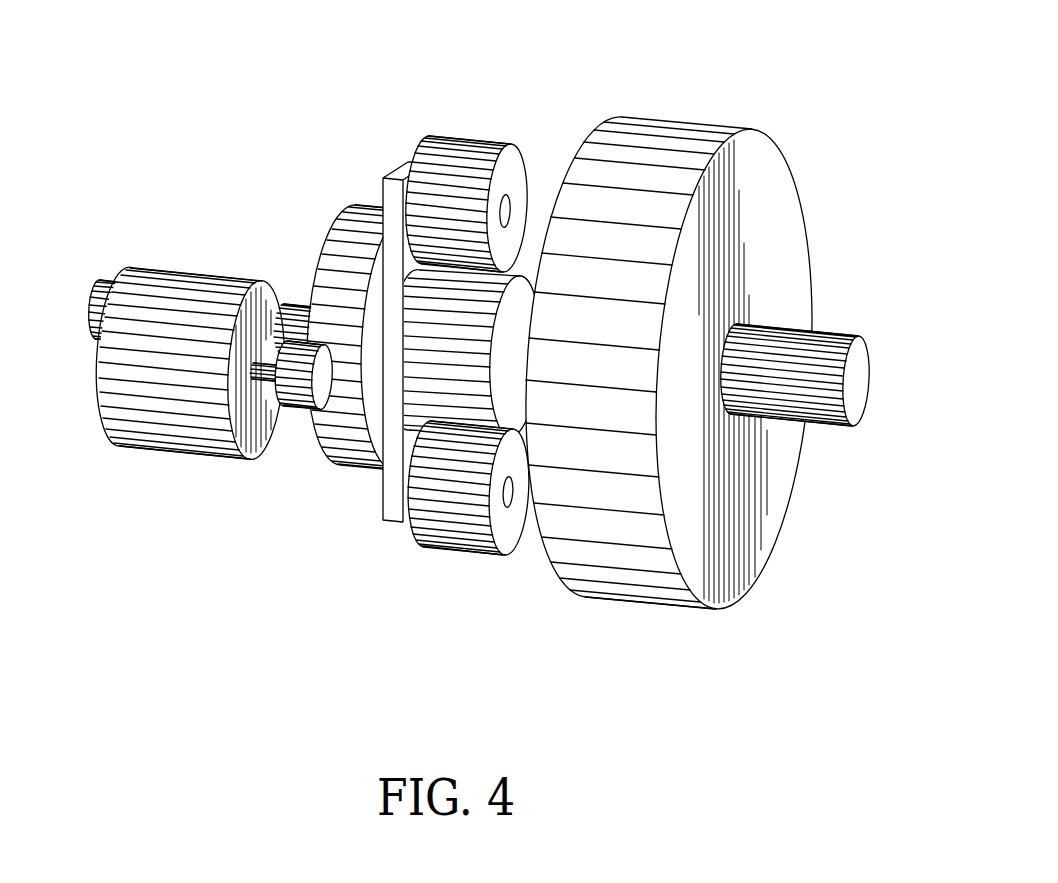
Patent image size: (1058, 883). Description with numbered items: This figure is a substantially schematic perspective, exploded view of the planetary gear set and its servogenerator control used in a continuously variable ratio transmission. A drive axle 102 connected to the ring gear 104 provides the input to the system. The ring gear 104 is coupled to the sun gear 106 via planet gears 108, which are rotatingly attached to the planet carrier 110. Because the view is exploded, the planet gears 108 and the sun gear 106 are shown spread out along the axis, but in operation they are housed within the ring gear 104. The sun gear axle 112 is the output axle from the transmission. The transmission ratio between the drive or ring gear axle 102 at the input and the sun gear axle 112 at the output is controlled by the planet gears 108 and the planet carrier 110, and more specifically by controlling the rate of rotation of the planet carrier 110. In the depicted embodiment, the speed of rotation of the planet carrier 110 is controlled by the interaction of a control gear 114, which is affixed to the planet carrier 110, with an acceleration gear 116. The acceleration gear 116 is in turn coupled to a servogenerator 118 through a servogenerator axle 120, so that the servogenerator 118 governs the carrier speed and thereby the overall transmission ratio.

The drive axle 102 is at (853, 412).
The ring gear 104 is at (713, 585).
The sun gear 106 is at (440, 373).
The planet gears 108 is at (468, 137).
The planet carrier 110 is at (395, 525).
The sun gear axle 112 is at (91, 294).
The control gear 114 is at (325, 465).
The acceleration gear 116 is at (293, 403).
The servogenerator 118 is at (190, 272).
The servogenerator axle 120 is at (252, 371).